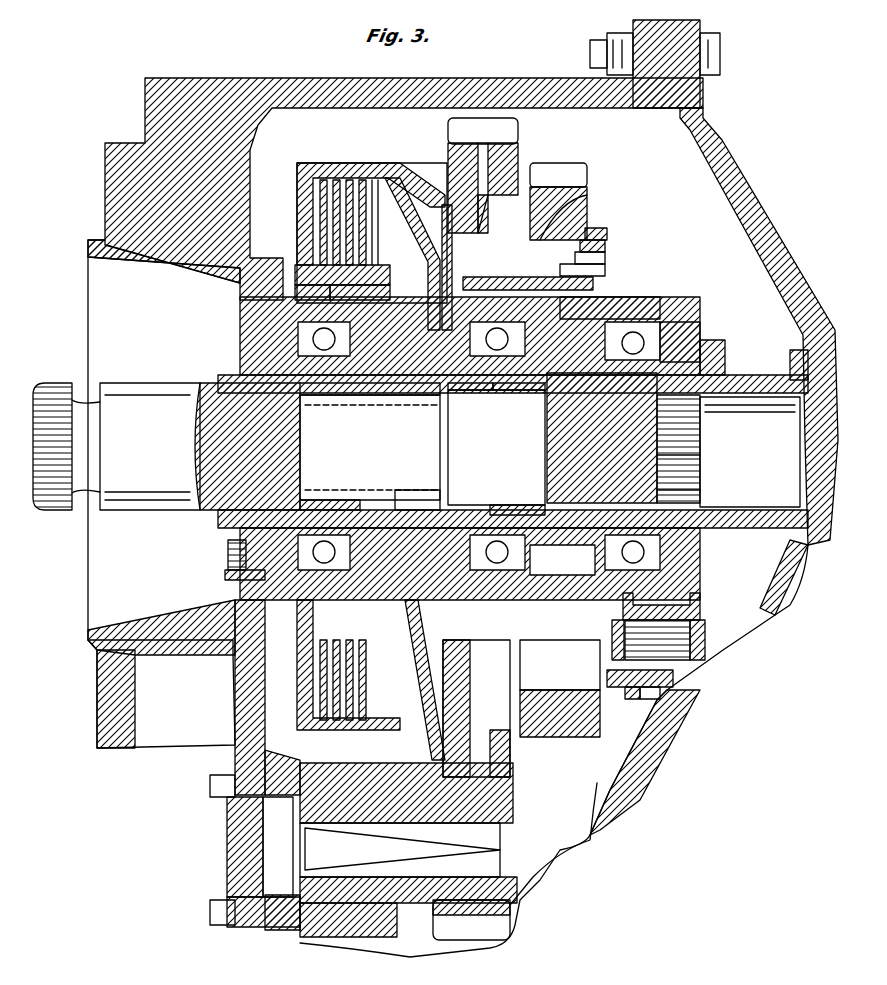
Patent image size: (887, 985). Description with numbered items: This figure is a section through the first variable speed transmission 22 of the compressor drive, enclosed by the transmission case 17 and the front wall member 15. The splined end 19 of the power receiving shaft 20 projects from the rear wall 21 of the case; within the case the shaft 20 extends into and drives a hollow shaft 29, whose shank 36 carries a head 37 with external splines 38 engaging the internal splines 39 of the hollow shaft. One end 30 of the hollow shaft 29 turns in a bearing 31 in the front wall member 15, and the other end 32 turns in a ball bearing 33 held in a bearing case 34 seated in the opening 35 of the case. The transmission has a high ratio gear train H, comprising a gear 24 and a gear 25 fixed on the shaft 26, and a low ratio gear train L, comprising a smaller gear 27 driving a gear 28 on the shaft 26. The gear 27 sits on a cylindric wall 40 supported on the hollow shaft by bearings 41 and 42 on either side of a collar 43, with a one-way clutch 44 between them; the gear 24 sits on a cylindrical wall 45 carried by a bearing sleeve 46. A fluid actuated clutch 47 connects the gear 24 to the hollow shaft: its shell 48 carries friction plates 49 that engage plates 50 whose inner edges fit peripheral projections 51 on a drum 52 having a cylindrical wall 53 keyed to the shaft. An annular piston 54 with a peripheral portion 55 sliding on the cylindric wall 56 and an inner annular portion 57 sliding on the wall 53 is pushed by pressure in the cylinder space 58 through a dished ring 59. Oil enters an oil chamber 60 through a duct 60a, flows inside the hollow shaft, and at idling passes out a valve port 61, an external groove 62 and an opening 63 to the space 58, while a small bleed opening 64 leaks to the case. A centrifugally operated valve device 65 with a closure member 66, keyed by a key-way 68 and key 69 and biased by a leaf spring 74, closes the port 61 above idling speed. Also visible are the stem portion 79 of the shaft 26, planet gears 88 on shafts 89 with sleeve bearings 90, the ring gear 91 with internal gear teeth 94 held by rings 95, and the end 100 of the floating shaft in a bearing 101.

The front wall member 15 is at (762, 208).
The transmission case 17 is at (428, 82).
The splined end 19 is at (60, 380).
The power receiving shaft 20 is at (158, 392).
The rear wall 21 is at (104, 232).
The first variable speed transmission 22 is at (298, 138).
The gear 24 is at (495, 145).
The gear 25 is at (480, 940).
The shaft 26 is at (538, 890).
The gear 27 is at (590, 196).
The gear 28 is at (603, 777).
The hollow shaft 29 is at (696, 340).
The end 30 is at (764, 396).
The bearing 31 is at (718, 362).
The end 32 is at (246, 530).
The ball bearing 33 is at (230, 556).
The bearing case 34 is at (238, 573).
The opening 35 is at (222, 650).
The shank 36 is at (388, 448).
The head 37 is at (672, 460).
The external splines 38 is at (680, 490).
The internal splines 39 is at (688, 418).
The cylindric wall 40 is at (598, 278).
The bearing 41 is at (596, 262).
The bearing 42 is at (650, 322).
The collar 43 is at (602, 310).
The one-way clutch 44 is at (602, 290).
The cylindrical wall 45 is at (496, 272).
The bearing sleeve 46 is at (592, 236).
The fluid actuated clutch 47 is at (308, 140).
The shell 48 is at (318, 160).
The annular friction plates 49 is at (330, 188).
The annular friction plates 50 is at (332, 232).
The peripheral projections 51 is at (350, 282).
The drum 52 is at (256, 302).
The cylindrical wall 53 is at (360, 395).
The annular piston 54 is at (346, 220).
The peripheral portion 55 is at (388, 205).
The cylindric wall 56 is at (440, 230).
The inner annular portion 57 is at (350, 160).
The cylinder space 58 is at (510, 215).
The dished ring 59 is at (306, 670).
The oil chamber 60 is at (798, 360).
The duct 60a is at (797, 585).
The valve port 61 is at (595, 555).
The external groove 62 is at (560, 710).
The opening 63 is at (330, 474).
The bleed opening 64 is at (435, 718).
The centrifugally operated valve device 65 is at (496, 454).
The closure member 66 is at (512, 502).
The key-way 68 is at (520, 392).
The key 69 is at (470, 392).
The leaf spring 74 is at (400, 494).
The stem portion 79 is at (330, 930).
The planet gears 88 is at (655, 685).
The shafts 89 is at (656, 712).
The sleeve bearings 90 is at (638, 722).
The ring gear 91 is at (655, 612).
The internal gear teeth 94 is at (616, 625).
The rings 95 is at (706, 624).
The end 100 is at (588, 852).
The bearing 101 is at (588, 826).
The high ratio gear train H is at (485, 130).
The low ratio gear train L is at (568, 185).